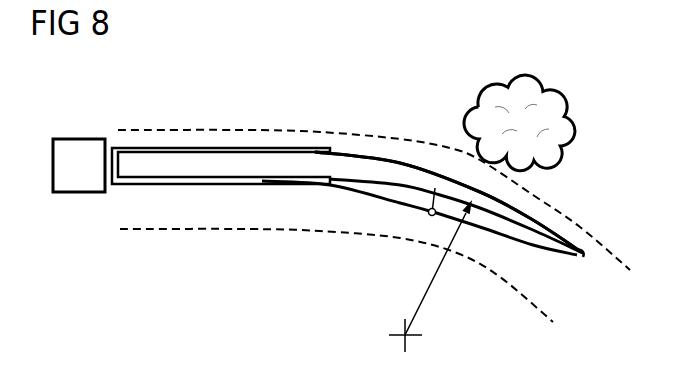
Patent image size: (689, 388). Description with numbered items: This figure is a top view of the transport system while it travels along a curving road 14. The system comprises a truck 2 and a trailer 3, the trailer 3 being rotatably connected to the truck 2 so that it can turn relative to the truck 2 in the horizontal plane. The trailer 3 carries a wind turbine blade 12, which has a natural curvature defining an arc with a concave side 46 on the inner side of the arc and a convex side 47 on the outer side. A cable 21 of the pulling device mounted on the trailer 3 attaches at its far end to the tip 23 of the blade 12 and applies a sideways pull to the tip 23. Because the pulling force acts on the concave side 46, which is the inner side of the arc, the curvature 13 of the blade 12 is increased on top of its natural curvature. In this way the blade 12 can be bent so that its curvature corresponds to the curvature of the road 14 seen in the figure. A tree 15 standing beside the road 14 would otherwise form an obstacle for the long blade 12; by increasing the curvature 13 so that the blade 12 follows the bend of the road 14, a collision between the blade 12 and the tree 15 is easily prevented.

The truck 2 is at (83, 139).
The trailer 3 is at (211, 148).
The wind turbine blade 12 is at (360, 142).
The curvature 13 is at (436, 280).
The road 14 is at (580, 228).
The tree 15 is at (565, 108).
The cable 21 is at (345, 201).
The tip 23 is at (583, 256).
The concave side 46 is at (416, 190).
The convex side 47 is at (405, 163).